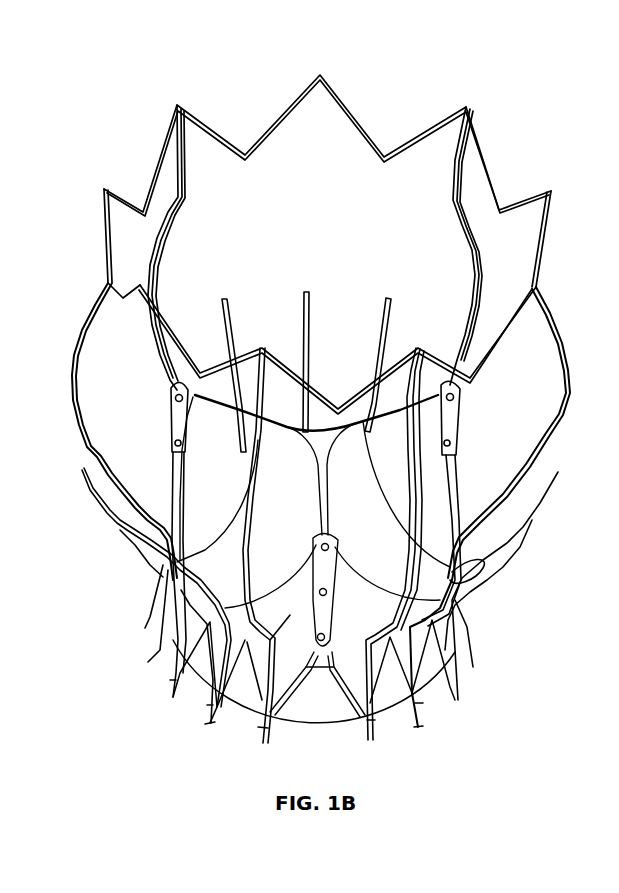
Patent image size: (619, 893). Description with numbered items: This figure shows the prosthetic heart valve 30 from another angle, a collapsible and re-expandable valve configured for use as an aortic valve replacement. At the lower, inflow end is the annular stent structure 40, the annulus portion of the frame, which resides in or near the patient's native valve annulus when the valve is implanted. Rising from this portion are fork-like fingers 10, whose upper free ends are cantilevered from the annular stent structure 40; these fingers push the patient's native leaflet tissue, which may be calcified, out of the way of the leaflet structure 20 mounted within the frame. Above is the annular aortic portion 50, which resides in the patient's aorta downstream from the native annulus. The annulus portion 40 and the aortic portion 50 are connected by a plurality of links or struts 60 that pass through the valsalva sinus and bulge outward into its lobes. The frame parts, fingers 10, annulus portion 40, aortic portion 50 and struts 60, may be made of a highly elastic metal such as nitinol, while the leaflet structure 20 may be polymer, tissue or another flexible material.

The prosthetic heart valve 30 is at (139, 74).
The annular aortic portion 50 is at (485, 150).
The links or struts 60 is at (72, 362).
The fork-like fingers 10 is at (307, 292).
The leaflet structure 20 is at (442, 503).
The annular stent structure 40 is at (183, 667).